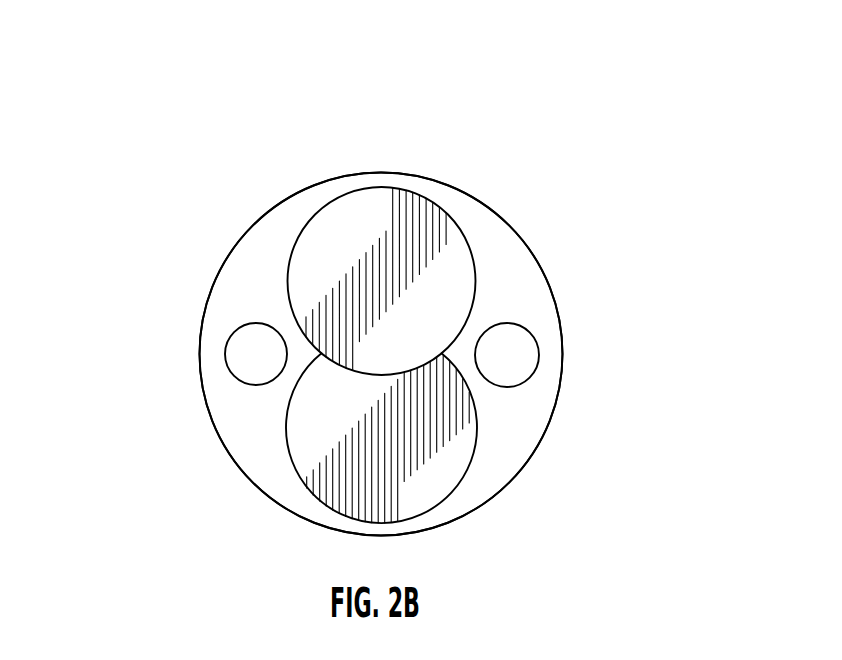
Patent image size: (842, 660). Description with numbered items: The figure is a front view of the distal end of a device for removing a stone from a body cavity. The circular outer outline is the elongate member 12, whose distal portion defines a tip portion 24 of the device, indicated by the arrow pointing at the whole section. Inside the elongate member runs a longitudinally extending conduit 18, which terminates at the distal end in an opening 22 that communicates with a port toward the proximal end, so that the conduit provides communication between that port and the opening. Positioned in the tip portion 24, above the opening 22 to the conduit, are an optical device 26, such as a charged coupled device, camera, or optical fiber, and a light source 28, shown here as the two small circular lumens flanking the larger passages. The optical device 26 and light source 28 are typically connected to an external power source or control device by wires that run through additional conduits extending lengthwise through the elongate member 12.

The elongate member 12 is at (520, 232).
The conduit 18 is at (437, 487).
The opening 22 is at (317, 482).
The tip portion 24 is at (203, 215).
The optical device 26 is at (363, 212).
The light source 28 is at (245, 358).